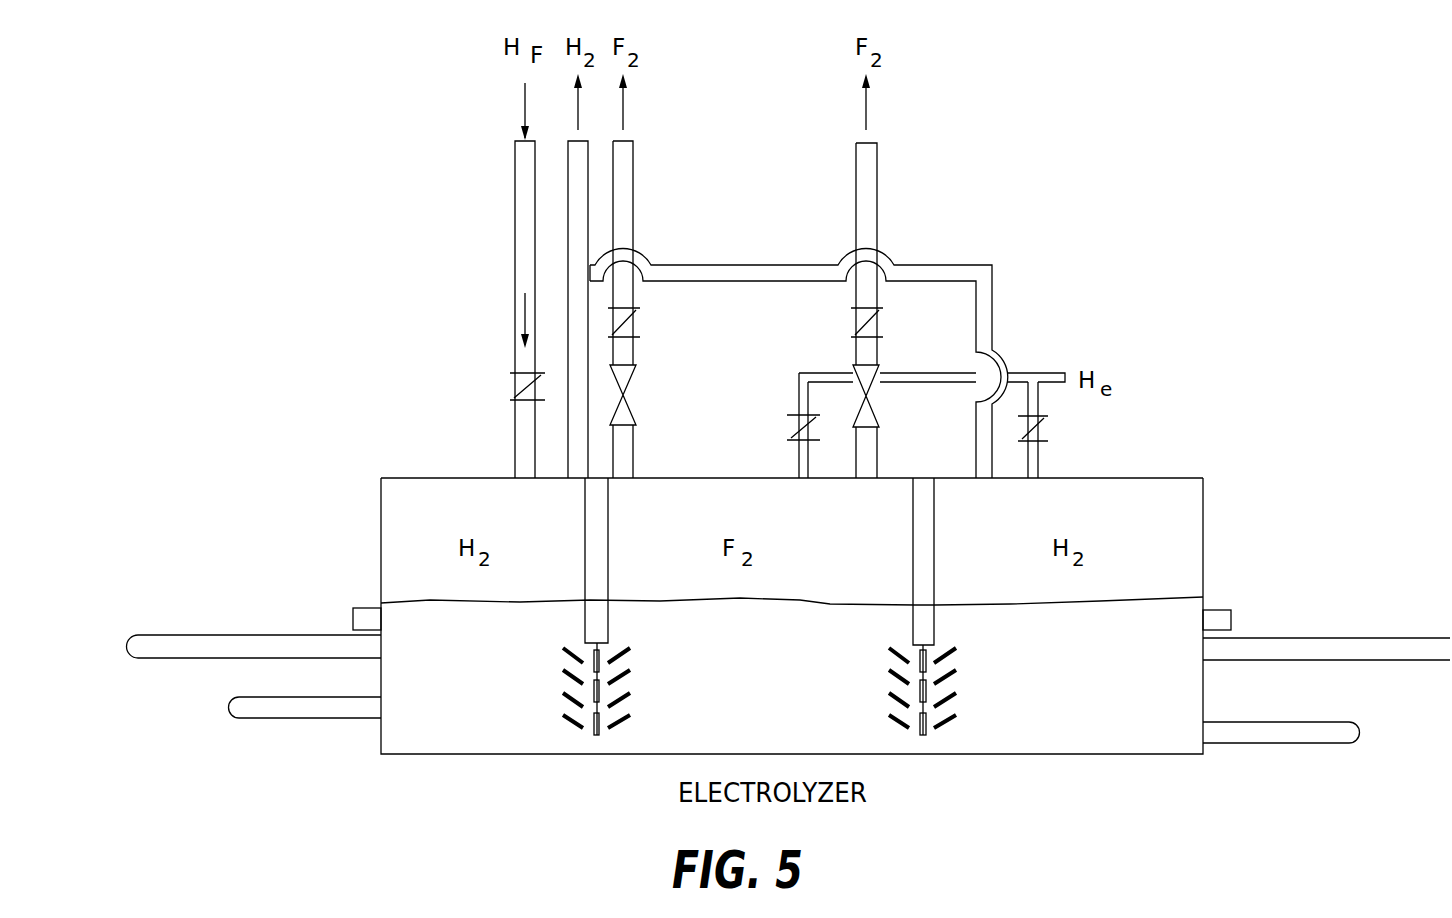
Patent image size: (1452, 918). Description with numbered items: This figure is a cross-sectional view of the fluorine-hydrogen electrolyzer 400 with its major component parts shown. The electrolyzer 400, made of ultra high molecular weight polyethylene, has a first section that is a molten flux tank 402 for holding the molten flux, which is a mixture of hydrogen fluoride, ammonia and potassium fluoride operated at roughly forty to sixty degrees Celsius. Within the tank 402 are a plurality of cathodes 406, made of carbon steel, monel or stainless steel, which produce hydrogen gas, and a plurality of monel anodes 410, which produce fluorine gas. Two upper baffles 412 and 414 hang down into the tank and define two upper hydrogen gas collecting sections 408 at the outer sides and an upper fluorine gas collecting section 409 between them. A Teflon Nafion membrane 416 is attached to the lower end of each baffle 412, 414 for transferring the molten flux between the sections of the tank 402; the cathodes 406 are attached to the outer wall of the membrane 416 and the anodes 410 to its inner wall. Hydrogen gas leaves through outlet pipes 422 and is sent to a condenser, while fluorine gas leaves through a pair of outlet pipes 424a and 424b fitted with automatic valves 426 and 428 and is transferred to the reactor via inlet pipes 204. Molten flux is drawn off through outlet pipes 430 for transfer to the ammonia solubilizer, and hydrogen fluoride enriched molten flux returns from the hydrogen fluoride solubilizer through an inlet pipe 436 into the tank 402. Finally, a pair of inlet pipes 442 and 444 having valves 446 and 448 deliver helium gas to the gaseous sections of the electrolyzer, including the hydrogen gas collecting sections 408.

The inlet pipes 204 is at (890, 204).
The electrolyzer 400 is at (785, 625).
The molten flux tank 402 is at (1112, 745).
The cathodes 406 is at (957, 713).
The upper hydrogen gas collecting sections 408 is at (1178, 494).
The upper fluorine gas collecting section 409 is at (740, 490).
The anodes 410 is at (891, 698).
The upper baffle 412 is at (585, 530).
The upper baffle 414 is at (912, 531).
The membrane 416 is at (928, 652).
The outlet pipes 422 is at (1010, 298).
The outlet pipe 424a is at (633, 442).
The outlet pipe 424b is at (880, 447).
The automatic valve 426 is at (634, 373).
The automatic valve 428 is at (832, 372).
The outlet pipes 430 is at (300, 697).
The inlet pipe 436 is at (1232, 732).
The inlet pipe 442 is at (798, 462).
The inlet pipe 444 is at (1038, 466).
The valve 446 is at (797, 407).
The valve 448 is at (1048, 427).